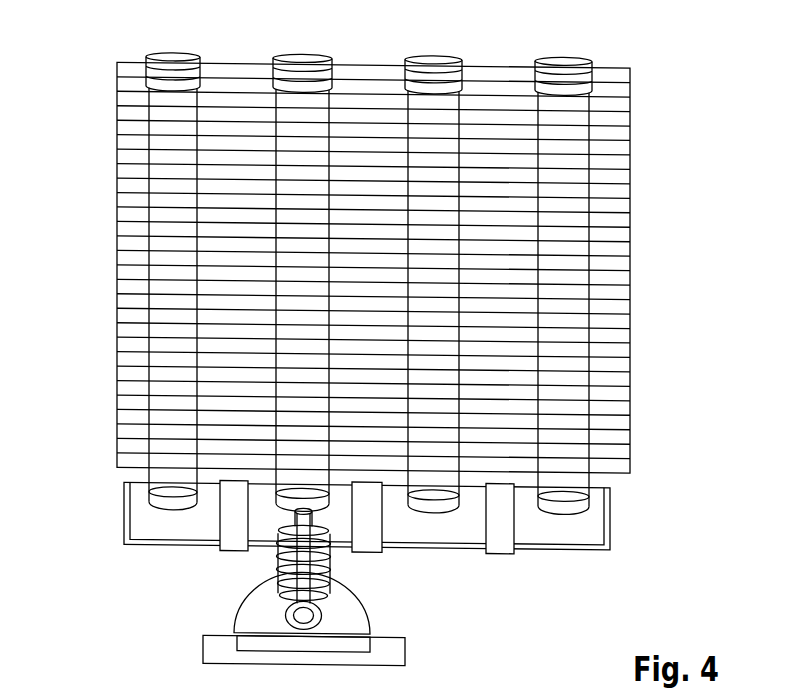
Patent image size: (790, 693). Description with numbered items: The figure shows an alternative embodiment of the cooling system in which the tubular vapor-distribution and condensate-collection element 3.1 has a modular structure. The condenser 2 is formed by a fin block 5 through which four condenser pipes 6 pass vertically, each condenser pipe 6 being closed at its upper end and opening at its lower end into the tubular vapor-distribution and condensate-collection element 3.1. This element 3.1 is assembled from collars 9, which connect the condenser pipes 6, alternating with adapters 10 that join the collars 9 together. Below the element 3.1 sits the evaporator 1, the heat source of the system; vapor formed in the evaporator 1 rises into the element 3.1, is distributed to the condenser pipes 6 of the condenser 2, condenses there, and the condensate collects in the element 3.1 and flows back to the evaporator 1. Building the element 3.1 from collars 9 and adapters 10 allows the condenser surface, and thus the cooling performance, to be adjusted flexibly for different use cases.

The evaporator 1 is at (340, 603).
The condenser 2 is at (178, 124).
The tubular vapor-distribution and condensate-collection element 3.1 is at (602, 520).
The fin block 5 is at (120, 325).
The condenser pipes 6 is at (172, 55).
The collars 9 is at (272, 509).
The adapters 10 is at (225, 522).